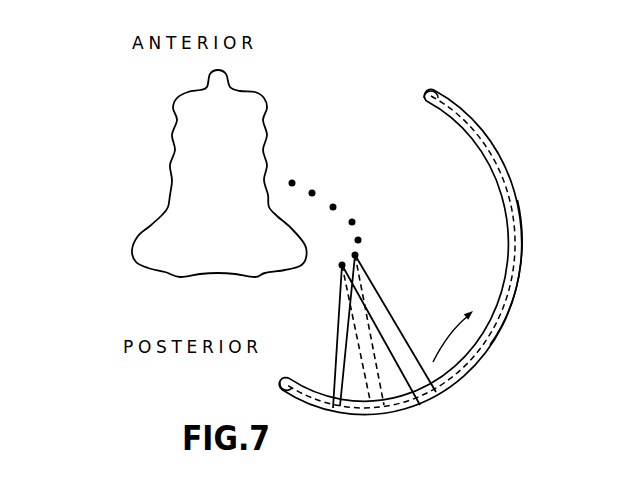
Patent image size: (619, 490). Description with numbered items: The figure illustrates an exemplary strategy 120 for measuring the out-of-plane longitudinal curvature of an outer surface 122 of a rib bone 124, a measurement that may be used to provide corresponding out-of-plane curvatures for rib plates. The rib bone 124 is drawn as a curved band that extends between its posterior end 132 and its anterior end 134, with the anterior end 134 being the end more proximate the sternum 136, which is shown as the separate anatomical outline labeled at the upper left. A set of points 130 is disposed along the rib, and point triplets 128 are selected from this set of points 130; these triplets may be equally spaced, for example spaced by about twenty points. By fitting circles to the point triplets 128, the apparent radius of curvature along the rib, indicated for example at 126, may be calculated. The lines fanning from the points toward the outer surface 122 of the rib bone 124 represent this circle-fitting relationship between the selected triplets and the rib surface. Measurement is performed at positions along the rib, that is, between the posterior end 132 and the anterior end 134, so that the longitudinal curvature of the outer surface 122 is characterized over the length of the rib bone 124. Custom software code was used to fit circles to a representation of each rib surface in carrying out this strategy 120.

The strategy 120 is at (78, 86).
The outer surface 122 is at (466, 375).
The rib bone 124 is at (505, 343).
The apparent radius of curvature 126 is at (358, 360).
The point triplets 128 is at (369, 413).
The set of points 130 is at (515, 295).
The posterior end 132 is at (276, 384).
The anterior end 134 is at (429, 90).
The sternum 136 is at (185, 187).